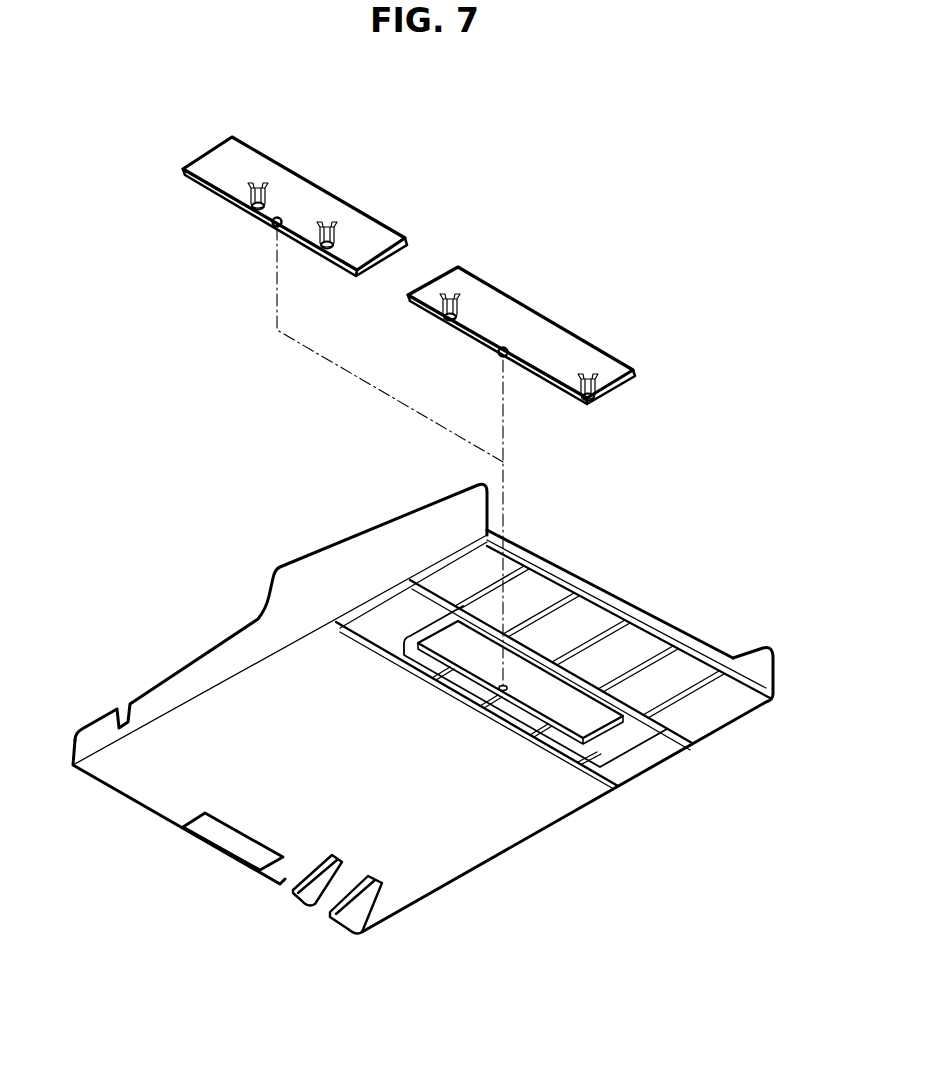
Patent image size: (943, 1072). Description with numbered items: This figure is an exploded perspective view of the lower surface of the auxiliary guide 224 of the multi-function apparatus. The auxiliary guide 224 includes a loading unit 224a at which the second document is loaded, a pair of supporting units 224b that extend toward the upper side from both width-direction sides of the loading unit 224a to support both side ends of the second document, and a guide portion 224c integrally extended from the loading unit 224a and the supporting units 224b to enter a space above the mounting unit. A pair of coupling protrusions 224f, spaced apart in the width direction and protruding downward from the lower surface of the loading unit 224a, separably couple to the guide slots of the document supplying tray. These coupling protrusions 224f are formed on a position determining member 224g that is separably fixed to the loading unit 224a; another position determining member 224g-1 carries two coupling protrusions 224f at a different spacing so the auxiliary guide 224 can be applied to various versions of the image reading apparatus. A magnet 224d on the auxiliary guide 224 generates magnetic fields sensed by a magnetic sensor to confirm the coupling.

The auxiliary guide 224 is at (423, 708).
The loading unit 224a is at (503, 818).
The supporting unit 224b is at (297, 575).
The guide portion 224c is at (138, 783).
The magnet 224d is at (228, 838).
The coupling protrusion 224f is at (320, 248).
The position determining member 224g is at (528, 312).
The position determining member 224g-1 is at (313, 186).